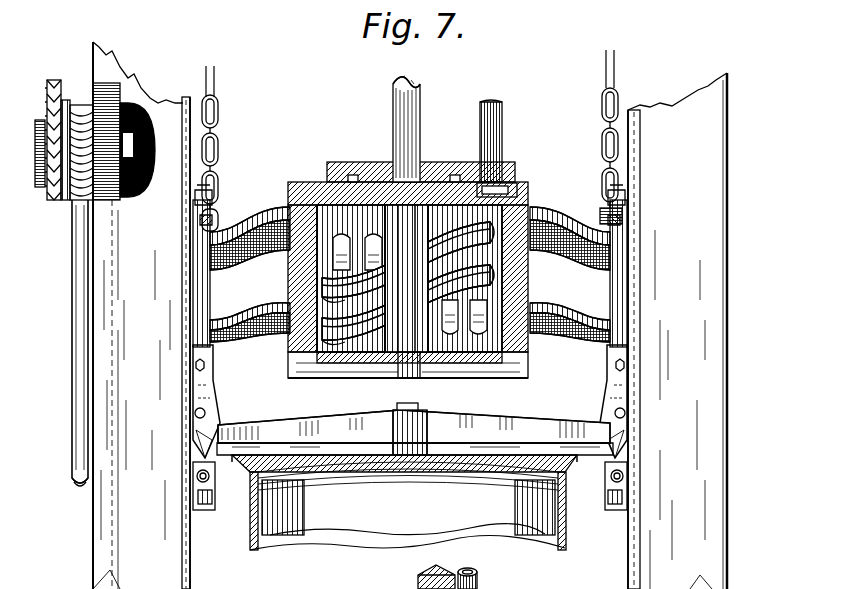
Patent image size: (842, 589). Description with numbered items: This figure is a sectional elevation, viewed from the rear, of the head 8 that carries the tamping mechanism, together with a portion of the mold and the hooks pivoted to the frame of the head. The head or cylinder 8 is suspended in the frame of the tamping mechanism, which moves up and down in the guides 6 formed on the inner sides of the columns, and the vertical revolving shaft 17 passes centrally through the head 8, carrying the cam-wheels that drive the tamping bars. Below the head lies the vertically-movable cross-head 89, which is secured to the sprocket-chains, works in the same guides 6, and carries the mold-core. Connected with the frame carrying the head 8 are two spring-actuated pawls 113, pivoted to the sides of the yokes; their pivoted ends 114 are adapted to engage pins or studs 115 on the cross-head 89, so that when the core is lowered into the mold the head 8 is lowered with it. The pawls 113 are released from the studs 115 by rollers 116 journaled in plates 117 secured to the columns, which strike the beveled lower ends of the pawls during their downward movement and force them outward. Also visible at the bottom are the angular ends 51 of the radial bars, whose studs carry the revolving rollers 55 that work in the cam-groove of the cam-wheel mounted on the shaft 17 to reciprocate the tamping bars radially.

The guides 6 is at (183, 296).
The head 8 is at (401, 267).
The vertical revolving shaft 17 is at (430, 227).
The cross-head 89 is at (415, 423).
The spring-actuated pawls 113 is at (214, 406).
The pivoted ends 114 is at (201, 436).
The pins or studs 115 is at (195, 413).
The rollers 116 is at (212, 480).
The plates 117 is at (196, 500).
The revolving rollers 55 is at (446, 567).
The angular ends 51 is at (478, 582).